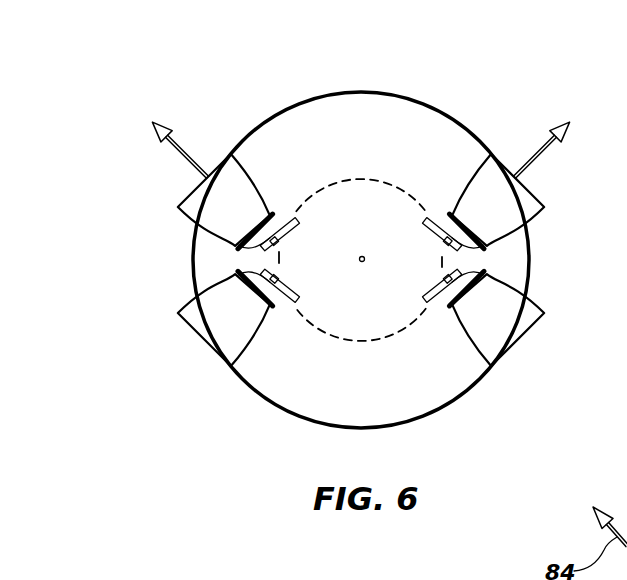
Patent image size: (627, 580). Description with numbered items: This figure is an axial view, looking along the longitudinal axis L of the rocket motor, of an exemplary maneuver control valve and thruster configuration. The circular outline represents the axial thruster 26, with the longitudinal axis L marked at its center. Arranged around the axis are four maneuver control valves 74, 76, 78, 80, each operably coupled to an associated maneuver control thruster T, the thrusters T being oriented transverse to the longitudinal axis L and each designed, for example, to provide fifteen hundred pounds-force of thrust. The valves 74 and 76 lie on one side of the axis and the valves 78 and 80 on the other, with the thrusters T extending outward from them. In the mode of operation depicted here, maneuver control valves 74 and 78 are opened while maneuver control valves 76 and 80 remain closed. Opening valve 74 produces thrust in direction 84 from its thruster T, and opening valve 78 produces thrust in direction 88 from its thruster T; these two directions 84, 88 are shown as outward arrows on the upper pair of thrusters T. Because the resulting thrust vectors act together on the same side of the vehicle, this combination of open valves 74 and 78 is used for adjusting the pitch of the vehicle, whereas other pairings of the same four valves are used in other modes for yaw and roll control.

The axial thruster 26 is at (315, 332).
The maneuver control valve 74 is at (280, 249).
The maneuver control valve 76 is at (280, 267).
The maneuver control valve 78 is at (448, 243).
The maneuver control valve 80 is at (451, 270).
The thrust direction 84 is at (171, 153).
The thrust direction 88 is at (548, 157).
The longitudinal axis L is at (363, 256).
The maneuver control thruster T is at (225, 188).